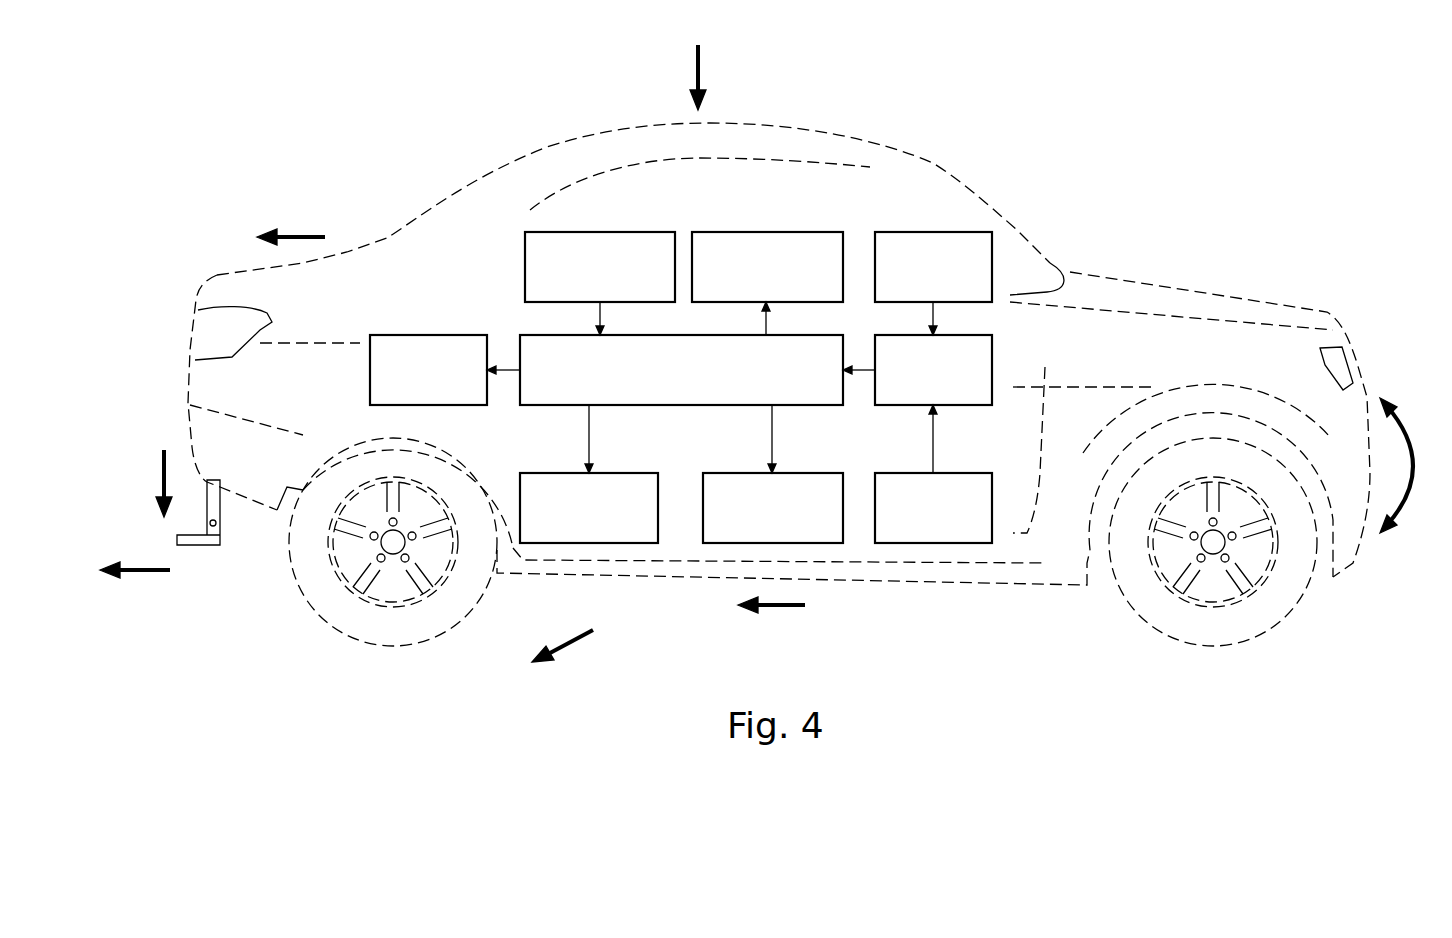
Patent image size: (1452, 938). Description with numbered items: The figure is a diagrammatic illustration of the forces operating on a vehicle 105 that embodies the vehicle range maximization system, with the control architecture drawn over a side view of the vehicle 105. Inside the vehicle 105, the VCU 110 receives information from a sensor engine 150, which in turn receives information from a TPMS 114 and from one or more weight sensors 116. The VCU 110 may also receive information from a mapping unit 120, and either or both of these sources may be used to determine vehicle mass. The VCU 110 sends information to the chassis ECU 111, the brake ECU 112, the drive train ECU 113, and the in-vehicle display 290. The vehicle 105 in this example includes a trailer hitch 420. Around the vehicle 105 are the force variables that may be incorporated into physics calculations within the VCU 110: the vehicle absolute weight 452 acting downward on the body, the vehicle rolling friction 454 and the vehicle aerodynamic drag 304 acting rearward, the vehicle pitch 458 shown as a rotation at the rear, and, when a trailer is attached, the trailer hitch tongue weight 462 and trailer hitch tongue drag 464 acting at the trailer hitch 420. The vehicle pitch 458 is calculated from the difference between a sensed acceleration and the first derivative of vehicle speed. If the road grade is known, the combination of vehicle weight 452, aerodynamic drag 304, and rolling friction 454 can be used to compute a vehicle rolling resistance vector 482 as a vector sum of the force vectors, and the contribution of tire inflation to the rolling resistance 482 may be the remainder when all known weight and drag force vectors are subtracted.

The vehicle 105 is at (1000, 200).
The VCU 110 is at (680, 405).
The chassis ECU 111 is at (430, 335).
The brake ECU 112 is at (565, 473).
The drive train ECU 113 is at (790, 473).
The TPMS 114 is at (950, 473).
The weight sensors 116 is at (920, 232).
The mapping unit 120 is at (525, 265).
The sensor engine 150 is at (992, 358).
The in-vehicle display 290 is at (757, 232).
The vehicle aerodynamic drag 304 is at (298, 235).
The trailer hitch 420 is at (210, 548).
The vehicle absolute weight 452 is at (698, 70).
The vehicle rolling friction 454 is at (800, 612).
The vehicle pitch 458 is at (1415, 470).
The trailer hitch tongue weight 462 is at (160, 470).
The trailer hitch tongue drag 464 is at (148, 572).
The vehicle rolling resistance vector 482 is at (570, 645).